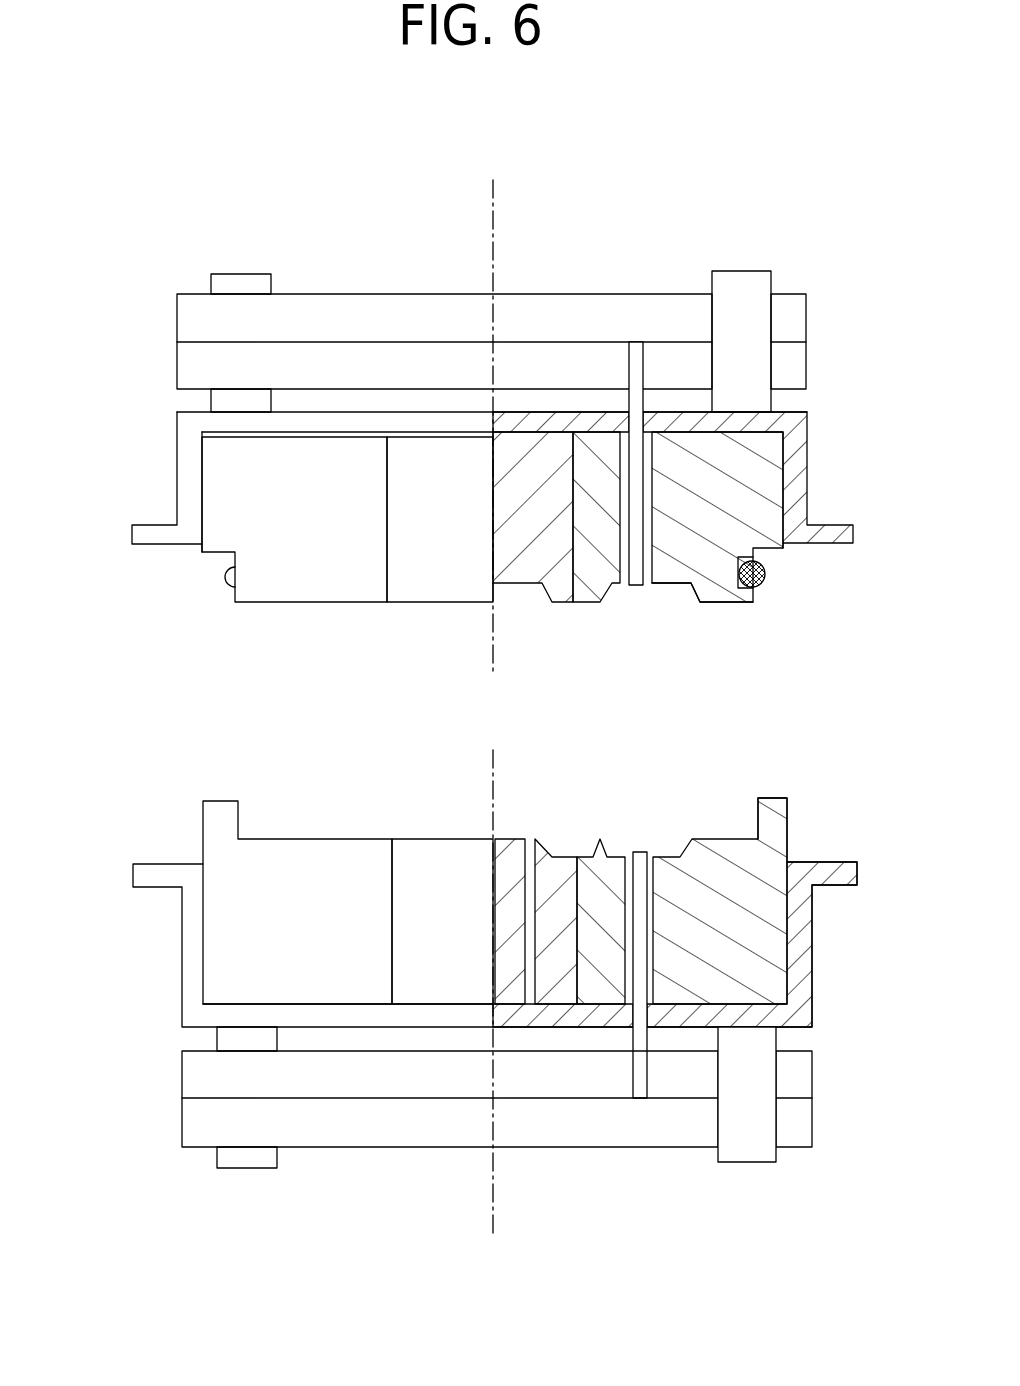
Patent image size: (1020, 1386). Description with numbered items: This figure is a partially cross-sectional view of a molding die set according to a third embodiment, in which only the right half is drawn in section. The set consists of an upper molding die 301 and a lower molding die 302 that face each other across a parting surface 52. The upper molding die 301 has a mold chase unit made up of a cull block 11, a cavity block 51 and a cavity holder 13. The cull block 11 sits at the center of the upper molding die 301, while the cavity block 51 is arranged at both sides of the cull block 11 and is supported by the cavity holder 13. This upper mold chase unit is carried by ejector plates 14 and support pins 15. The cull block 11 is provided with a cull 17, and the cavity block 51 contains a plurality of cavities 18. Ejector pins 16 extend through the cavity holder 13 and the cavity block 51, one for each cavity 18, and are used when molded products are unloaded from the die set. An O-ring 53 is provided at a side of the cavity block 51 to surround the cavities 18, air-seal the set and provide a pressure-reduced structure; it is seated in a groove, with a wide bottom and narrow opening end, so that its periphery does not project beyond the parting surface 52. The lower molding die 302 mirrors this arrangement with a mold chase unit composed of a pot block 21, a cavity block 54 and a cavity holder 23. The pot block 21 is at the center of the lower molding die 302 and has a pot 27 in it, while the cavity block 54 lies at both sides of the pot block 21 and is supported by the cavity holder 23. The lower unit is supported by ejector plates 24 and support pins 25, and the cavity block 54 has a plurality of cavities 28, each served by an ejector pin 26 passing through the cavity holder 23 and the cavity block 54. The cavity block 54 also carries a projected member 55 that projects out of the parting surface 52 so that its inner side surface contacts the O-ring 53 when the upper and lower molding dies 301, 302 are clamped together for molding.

The upper molding die 301 is at (146, 480).
The lower molding die 302 is at (146, 950).
The cull block 11 is at (426, 580).
The cavity holder 13 is at (802, 497).
The ejector plates 14 is at (798, 362).
The support pins 15 is at (750, 270).
The ejector pins 16 is at (627, 373).
The cull 17 is at (518, 590).
The cavities 18 is at (660, 590).
The pot block 21 is at (420, 852).
The cavity holder 23 is at (813, 918).
The ejector plates 24 is at (800, 1120).
The support pins 25 is at (748, 1162).
The ejector pins 26 is at (640, 852).
The pot 27 is at (530, 845).
The cavities 28 is at (674, 852).
The cavity block 51 is at (748, 464).
The parting surface 52 is at (302, 603).
The O-ring 53 is at (765, 574).
The cavity block 54 is at (780, 977).
The projected member 55 is at (770, 798).